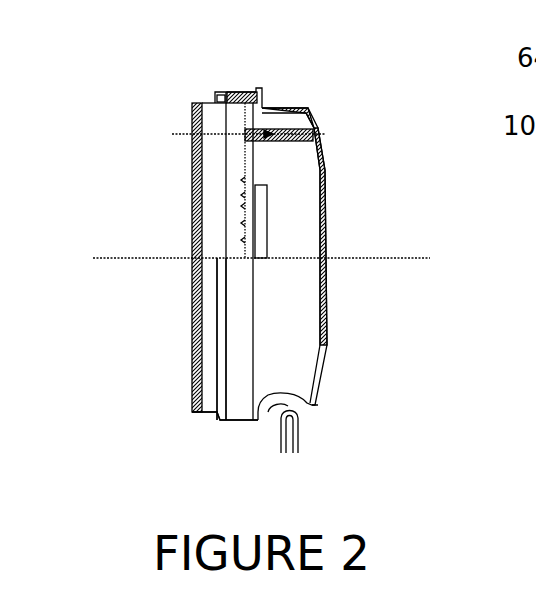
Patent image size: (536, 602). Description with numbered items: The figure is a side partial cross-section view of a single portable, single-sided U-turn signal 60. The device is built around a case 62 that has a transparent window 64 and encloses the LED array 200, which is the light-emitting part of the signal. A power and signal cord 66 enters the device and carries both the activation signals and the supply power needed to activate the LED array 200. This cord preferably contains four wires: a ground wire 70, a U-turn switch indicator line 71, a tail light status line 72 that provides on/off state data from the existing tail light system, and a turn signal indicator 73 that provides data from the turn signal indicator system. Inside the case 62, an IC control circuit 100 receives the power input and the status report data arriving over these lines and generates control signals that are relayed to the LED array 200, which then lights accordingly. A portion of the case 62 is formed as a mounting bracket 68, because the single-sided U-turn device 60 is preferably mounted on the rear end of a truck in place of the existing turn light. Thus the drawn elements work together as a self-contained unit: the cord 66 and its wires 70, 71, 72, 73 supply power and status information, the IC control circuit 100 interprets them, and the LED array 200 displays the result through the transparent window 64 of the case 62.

The single-sided U-turn signal 60 is at (157, 136).
The case 62 is at (290, 110).
The transparent window 64 is at (192, 230).
The power and signal cord 66 is at (295, 436).
The mounting bracket 68 is at (235, 421).
The ground wire 70 is at (385, 370).
The U-turn switch indicator line 71 is at (288, 423).
The tail light status line 72 is at (288, 423).
The turn signal indicator 73 is at (290, 412).
The IC control circuit 100 is at (268, 230).
The LED array 200 is at (236, 250).